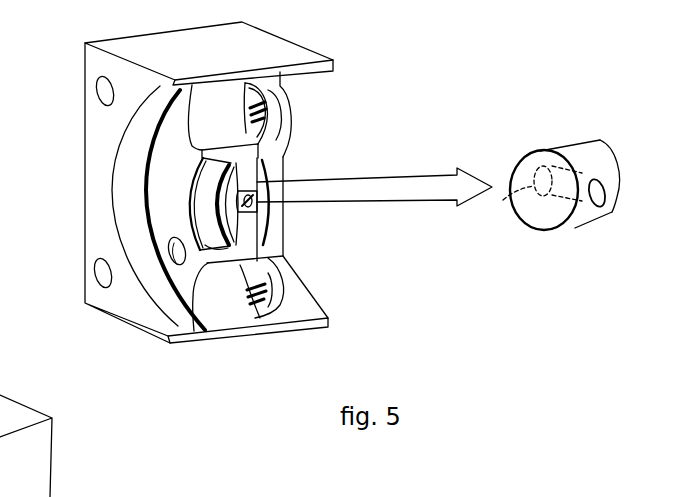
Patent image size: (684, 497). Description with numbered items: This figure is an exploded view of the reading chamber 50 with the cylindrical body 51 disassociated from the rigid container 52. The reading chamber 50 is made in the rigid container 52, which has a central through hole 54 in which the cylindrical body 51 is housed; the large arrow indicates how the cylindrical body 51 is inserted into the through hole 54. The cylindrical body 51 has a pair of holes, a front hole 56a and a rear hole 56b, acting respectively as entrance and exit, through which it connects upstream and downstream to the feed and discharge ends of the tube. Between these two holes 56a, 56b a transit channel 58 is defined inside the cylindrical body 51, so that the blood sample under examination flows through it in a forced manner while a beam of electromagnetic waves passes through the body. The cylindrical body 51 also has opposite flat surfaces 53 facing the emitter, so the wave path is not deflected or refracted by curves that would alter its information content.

The reading chamber 50 is at (215, 236).
The cylindrical body 51 is at (261, 182).
The rigid container 52 is at (100, 132).
The flat surfaces 53 is at (611, 150).
The central through hole 54 is at (202, 203).
The front hole 56a is at (503, 200).
The rear hole 56b is at (603, 199).
The transit channel 58 is at (564, 183).